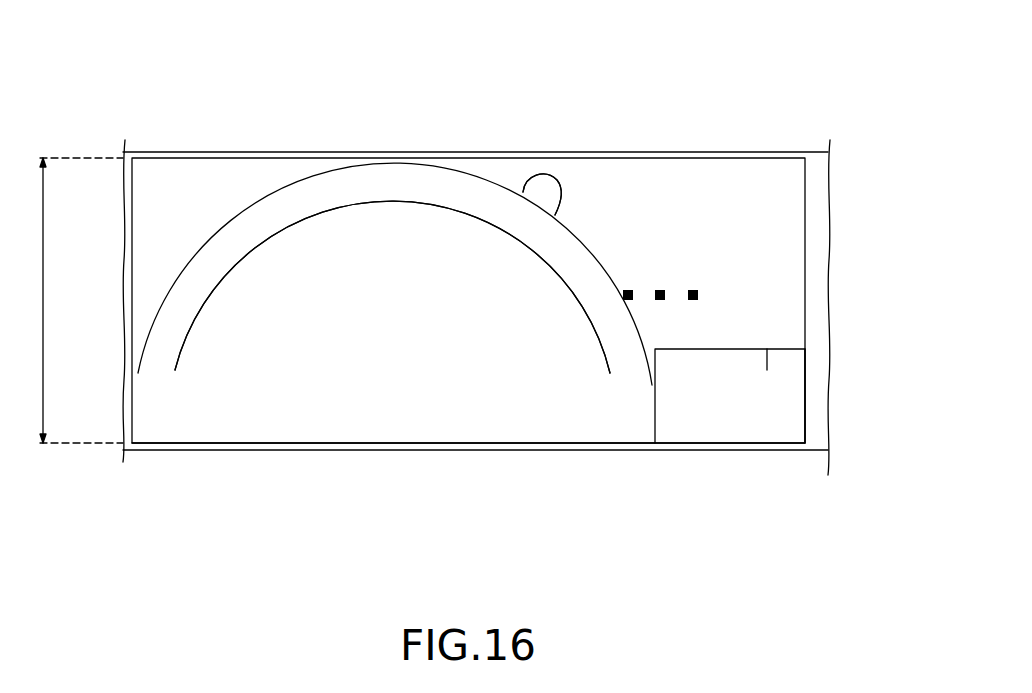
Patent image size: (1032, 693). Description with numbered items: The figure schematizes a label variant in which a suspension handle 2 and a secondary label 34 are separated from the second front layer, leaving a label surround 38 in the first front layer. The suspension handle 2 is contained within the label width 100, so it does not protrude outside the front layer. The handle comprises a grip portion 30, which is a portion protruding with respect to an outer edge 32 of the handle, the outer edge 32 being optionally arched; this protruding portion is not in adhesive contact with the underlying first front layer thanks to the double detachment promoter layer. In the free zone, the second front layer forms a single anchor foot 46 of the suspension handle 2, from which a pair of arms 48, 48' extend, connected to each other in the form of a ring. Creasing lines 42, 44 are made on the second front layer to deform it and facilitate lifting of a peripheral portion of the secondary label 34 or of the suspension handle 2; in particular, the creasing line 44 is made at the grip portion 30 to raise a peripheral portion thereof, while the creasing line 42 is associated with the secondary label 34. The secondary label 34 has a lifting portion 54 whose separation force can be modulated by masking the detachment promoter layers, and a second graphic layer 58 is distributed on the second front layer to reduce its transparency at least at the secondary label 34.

The suspension handle 2 is at (300, 178).
The grip portion 30 is at (560, 185).
The outer edge 32 is at (333, 163).
The secondary label 34 is at (652, 400).
The label surround 38 is at (812, 265).
The creasing line 42 is at (770, 355).
The creasing line 44 is at (540, 200).
The anchor foot 46 is at (375, 395).
The arm 48 is at (366, 218).
The arm 48' is at (488, 235).
The lifting portion 54 is at (788, 420).
The second graphic layer 58 is at (707, 412).
The label width 100 is at (73, 300).